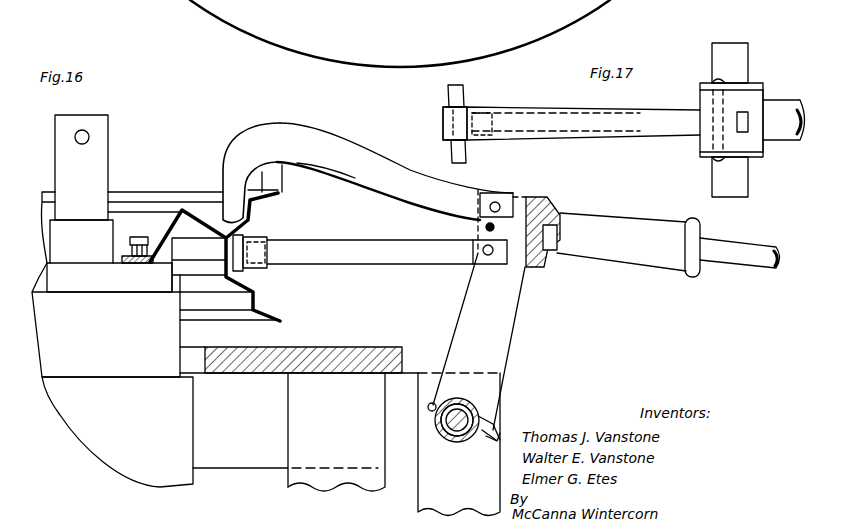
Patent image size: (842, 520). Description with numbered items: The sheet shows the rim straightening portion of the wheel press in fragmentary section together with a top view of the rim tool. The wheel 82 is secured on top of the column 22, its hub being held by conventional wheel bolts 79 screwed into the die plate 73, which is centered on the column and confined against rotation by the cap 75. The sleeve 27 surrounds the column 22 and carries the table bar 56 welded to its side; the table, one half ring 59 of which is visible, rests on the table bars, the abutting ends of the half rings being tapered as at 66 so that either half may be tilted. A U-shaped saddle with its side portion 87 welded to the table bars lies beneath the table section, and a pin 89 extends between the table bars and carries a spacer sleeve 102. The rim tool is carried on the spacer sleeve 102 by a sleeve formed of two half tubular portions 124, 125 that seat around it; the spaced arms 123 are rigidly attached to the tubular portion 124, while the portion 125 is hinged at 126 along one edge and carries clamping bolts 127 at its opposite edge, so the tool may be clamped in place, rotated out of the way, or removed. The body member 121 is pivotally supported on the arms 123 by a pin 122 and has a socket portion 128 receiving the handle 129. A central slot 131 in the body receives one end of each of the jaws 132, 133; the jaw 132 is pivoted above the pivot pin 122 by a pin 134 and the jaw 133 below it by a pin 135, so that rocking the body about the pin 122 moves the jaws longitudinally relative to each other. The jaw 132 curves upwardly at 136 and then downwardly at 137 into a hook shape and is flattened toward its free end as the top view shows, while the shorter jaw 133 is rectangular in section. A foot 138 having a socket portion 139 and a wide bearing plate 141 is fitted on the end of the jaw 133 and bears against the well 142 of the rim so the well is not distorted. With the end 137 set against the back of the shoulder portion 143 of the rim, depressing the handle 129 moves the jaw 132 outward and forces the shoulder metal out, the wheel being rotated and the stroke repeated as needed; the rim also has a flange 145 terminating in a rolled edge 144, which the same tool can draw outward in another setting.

In FIG. 16, the column 22 is at (106, 320).
In FIG. 16, the sleeve 27 is at (117, 432).
In FIG. 16, the table bar 56 is at (240, 430).
In FIG. 16, the half ring 59 is at (330, 347).
In FIG. 16, the tapered end 66 is at (412, 0).
In FIG. 16, the die plate 73 is at (109, 277).
In FIG. 16, the cap 75 is at (81, 189).
In FIG. 16, the wheel bolts 79 is at (138, 235).
In FIG. 16, the wheel 82 is at (163, 178).
In FIG. 16, the side portion 87 is at (305, 480).
In FIG. 16, the pin 89 is at (459, 443).
In FIG. 16, the spacer sleeve 102 is at (452, 438).
In FIG. 16, the body member 121 is at (547, 202).
In FIG. 17, the body member 121 is at (757, 84).
In FIG. 16, the pin 122 is at (485, 227).
In FIG. 16, the spaced arms 123 is at (479, 341).
In FIG. 17, the spaced arms 123 is at (750, 90).
In FIG. 16, the half tubular portion 124 is at (474, 408).
In FIG. 17, the half tubular portion 124 is at (723, 50).
In FIG. 16, the half tubular portion 125 is at (433, 430).
In FIG. 16, the hinge 126 is at (428, 408).
In FIG. 16, the clamping bolts 127 is at (487, 447).
In FIG. 16, the socket portion 128 is at (630, 228).
In FIG. 17, the socket portion 128 is at (778, 108).
In FIG. 16, the handle 129 is at (738, 262).
In FIG. 17, the central slot 131 is at (740, 124).
In FIG. 16, the jaw 132 is at (362, 164).
In FIG. 17, the jaw 132 is at (597, 120).
In FIG. 16, the jaw 133 is at (343, 256).
In FIG. 17, the jaw 133 is at (525, 116).
In FIG. 16, the pin 134 is at (498, 192).
In FIG. 17, the pin 134 is at (720, 80).
In FIG. 16, the pin 135 is at (483, 255).
In FIG. 16, the upwardly curved portion 136 is at (308, 169).
In FIG. 16, the end 137 is at (232, 207).
In FIG. 17, the end 137 is at (444, 121).
In FIG. 16, the foot 138 is at (276, 233).
In FIG. 16, the socket portion 139 is at (258, 268).
In FIG. 17, the bearing plate 141 is at (461, 96).
In FIG. 16, the well 142 is at (225, 258).
In FIG. 16, the shoulder portion 143 is at (270, 206).
In FIG. 16, the rolled edge 144 is at (283, 190).
In FIG. 16, the rim flange 145 is at (262, 192).